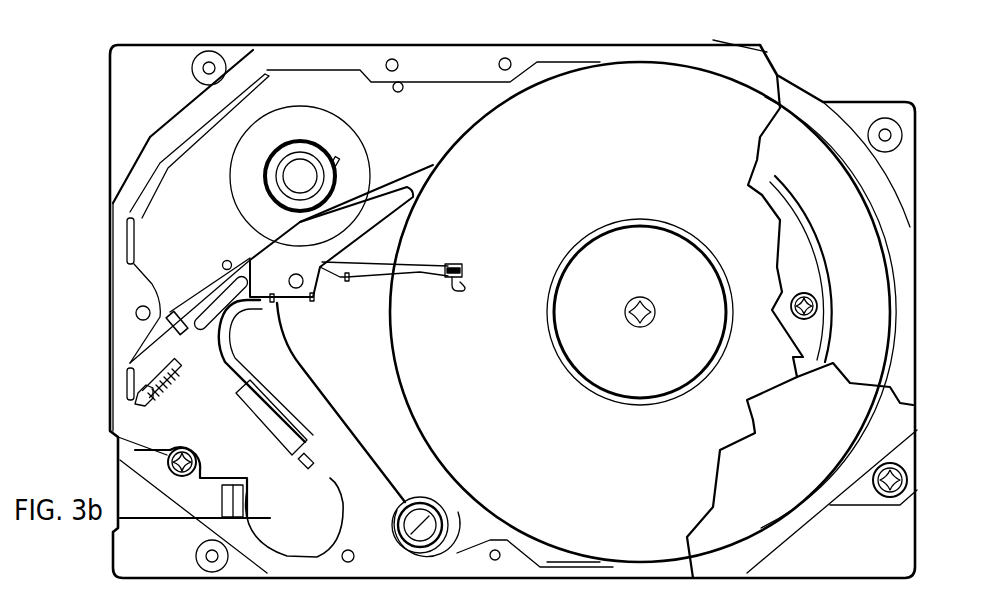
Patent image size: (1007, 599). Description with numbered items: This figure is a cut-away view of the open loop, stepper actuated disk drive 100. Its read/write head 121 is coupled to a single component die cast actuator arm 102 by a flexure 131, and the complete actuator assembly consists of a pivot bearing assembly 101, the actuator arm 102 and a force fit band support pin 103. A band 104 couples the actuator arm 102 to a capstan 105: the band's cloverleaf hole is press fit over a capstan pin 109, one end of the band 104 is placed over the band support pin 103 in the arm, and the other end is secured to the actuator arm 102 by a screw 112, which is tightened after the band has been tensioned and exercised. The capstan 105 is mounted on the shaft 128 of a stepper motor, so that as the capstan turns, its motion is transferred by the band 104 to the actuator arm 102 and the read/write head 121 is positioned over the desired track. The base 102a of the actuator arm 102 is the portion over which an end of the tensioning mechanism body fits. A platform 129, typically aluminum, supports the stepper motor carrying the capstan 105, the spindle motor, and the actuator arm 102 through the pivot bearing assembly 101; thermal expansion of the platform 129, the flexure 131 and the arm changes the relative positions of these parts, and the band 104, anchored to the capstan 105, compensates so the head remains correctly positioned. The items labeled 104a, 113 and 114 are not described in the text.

The disk drive 100 is at (62, 67).
The pivot bearing assembly 101 is at (401, 503).
The actuator arm 102 is at (323, 403).
The base 102a is at (443, 517).
The band support pin 103 is at (433, 166).
The band 104 is at (268, 164).
The actuator arm 104a is at (252, 254).
The capstan 105 is at (312, 147).
The capstan pin 109 is at (336, 158).
The screw 112 is at (178, 310).
The clip 113 is at (312, 462).
The bracket 114 is at (273, 437).
The read/write head 121 is at (448, 262).
The shaft 128 is at (299, 170).
The platform 129 is at (218, 462).
The flexure 131 is at (386, 290).